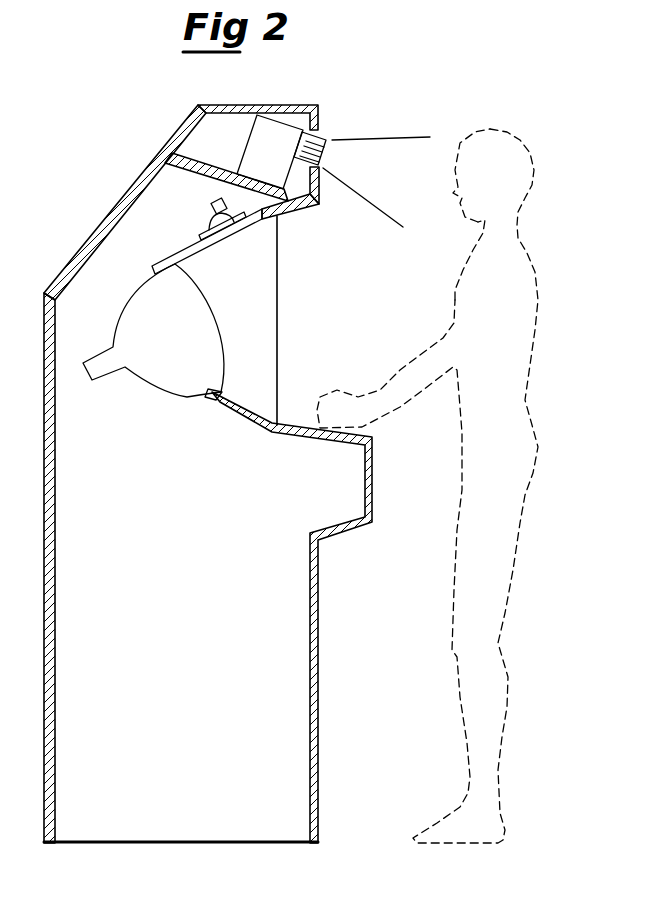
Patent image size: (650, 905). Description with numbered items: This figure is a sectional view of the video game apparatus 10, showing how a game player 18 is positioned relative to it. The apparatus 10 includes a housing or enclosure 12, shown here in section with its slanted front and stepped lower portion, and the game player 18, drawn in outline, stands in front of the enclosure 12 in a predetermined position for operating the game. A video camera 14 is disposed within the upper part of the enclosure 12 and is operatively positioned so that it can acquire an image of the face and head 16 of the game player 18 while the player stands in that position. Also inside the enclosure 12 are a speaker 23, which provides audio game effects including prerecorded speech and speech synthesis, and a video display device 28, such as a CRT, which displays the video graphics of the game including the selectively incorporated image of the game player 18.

The video game apparatus 10 is at (208, 474).
The housing or enclosure 12 is at (120, 201).
The video camera 14 is at (273, 132).
The face and head 16 is at (427, 469).
The game player 18 is at (455, 272).
The speaker 23 is at (210, 228).
The video display device 28 is at (203, 297).